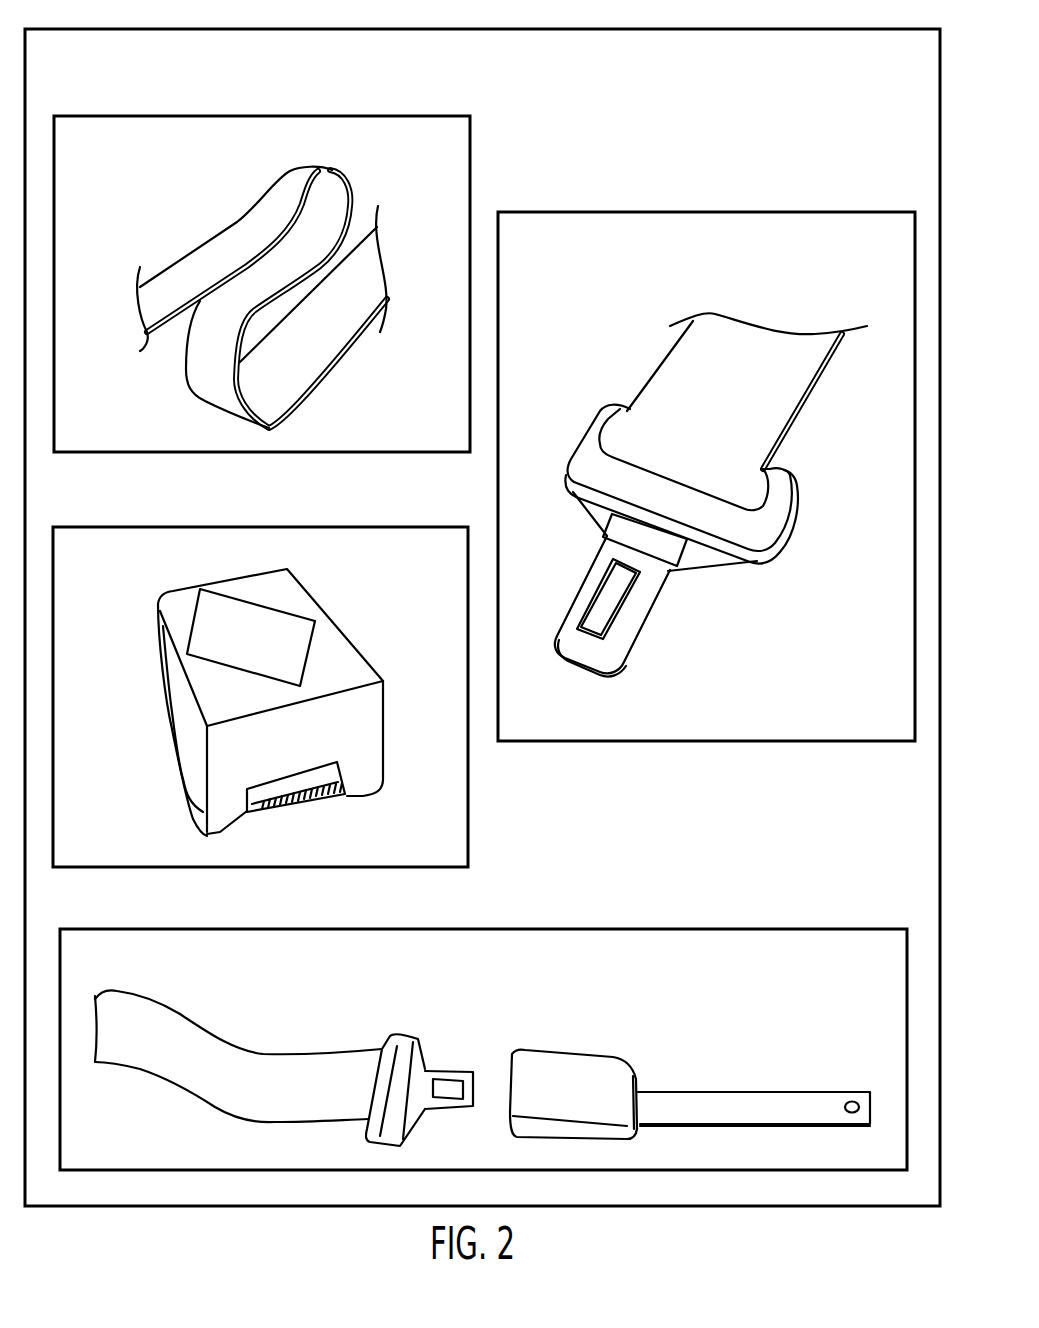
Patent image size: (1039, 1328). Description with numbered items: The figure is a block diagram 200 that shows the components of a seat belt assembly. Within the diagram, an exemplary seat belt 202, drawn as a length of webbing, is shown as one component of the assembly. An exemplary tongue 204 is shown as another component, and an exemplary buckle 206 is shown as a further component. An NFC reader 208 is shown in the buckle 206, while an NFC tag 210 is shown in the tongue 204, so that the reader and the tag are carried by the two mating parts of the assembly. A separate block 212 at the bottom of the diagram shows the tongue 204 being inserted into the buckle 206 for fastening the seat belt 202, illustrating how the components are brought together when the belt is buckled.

The block diagram 200 is at (104, 30).
The seat belt 202 is at (95, 116).
The tongue 204 is at (706, 456).
The buckle 206 is at (260, 677).
The NFC reader 208 is at (297, 623).
The NFC tag 210 is at (690, 557).
The block 212 is at (108, 929).